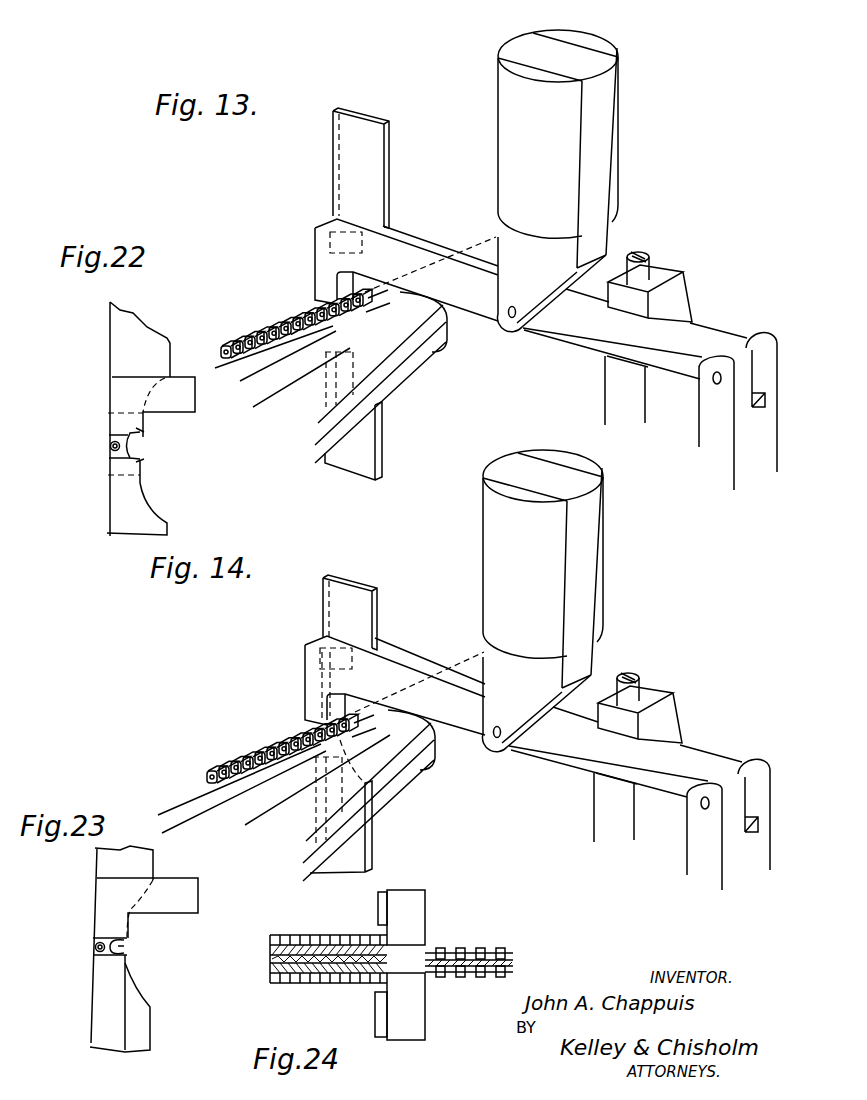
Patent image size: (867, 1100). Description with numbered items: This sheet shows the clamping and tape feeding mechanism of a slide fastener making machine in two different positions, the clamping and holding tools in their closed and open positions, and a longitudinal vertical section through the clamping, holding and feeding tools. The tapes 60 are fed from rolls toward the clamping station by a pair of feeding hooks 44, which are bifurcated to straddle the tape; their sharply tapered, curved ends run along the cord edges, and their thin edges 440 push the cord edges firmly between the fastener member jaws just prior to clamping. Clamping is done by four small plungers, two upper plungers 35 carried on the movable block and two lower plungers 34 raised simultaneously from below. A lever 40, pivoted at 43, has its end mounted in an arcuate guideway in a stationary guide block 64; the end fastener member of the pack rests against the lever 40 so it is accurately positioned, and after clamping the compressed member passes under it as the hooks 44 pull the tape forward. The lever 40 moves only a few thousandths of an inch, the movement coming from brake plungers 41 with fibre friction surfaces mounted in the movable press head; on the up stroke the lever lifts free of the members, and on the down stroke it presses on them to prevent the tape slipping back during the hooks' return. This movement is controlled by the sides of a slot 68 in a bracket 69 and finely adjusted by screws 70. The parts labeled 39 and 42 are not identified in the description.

In FIG. 13, the lower plungers 34 is at (347, 447).
In FIG. 14, the lower plungers 34 is at (350, 855).
In FIG. 22, the lower plungers 34 is at (152, 532).
In FIG. 23, the lower plungers 34 is at (125, 1020).
In FIG. 24, the lower plungers 34 is at (378, 1017).
In FIG. 13, the upper plungers 35 is at (355, 140).
In FIG. 14, the upper plungers 35 is at (343, 609).
In FIG. 22, the upper plungers 35 is at (128, 337).
In FIG. 23, the upper plungers 35 is at (127, 883).
In FIG. 24, the upper plungers 35 is at (383, 895).
In FIG. 13, the chain links 39 is at (222, 352).
In FIG. 14, the chain links 39 is at (214, 772).
In FIG. 23, the chain links 39 is at (127, 947).
In FIG. 24, the chain links 39 is at (302, 937).
In FIG. 13, the lever 40 is at (376, 260).
In FIG. 14, the lever 40 is at (398, 670).
In FIG. 22, the lever 40 is at (167, 390).
In FIG. 23, the lever 40 is at (190, 897).
In FIG. 24, the lever 40 is at (417, 921).
In FIG. 13, the brake plungers 41 is at (590, 182).
In FIG. 14, the brake plungers 41 is at (578, 607).
In FIG. 13, the pivot hole 42 is at (525, 328).
In FIG. 14, the pivot hole 42 is at (510, 746).
In FIG. 13, the pivot 43 is at (717, 385).
In FIG. 14, the pivot 43 is at (705, 810).
In FIG. 13, the feeding hooks 44 is at (387, 337).
In FIG. 14, the feeding hooks 44 is at (378, 758).
In FIG. 24, the tapes 60 is at (510, 960).
In FIG. 13, the stationary guide block 64 is at (282, 366).
In FIG. 14, the stationary guide block 64 is at (274, 784).
In FIG. 22, the stationary guide block 64 is at (117, 463).
In FIG. 23, the stationary guide block 64 is at (103, 997).
In FIG. 24, the stationary guide block 64 is at (417, 1007).
In FIG. 13, the slot 68 is at (618, 358).
In FIG. 14, the slot 68 is at (608, 777).
In FIG. 13, the bracket 69 is at (670, 303).
In FIG. 14, the bracket 69 is at (657, 722).
In FIG. 13, the screws 70 is at (636, 273).
In FIG. 14, the screws 70 is at (625, 703).
In FIG. 24, the thin edges 440 is at (350, 958).